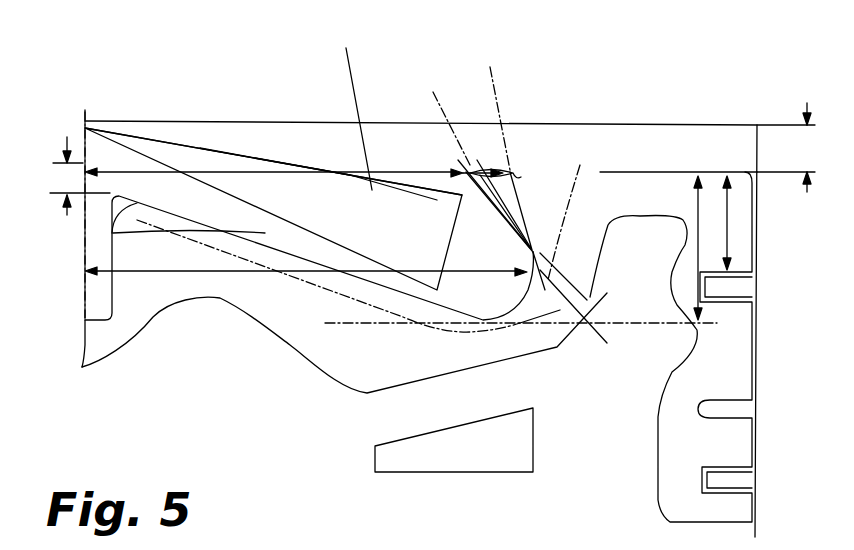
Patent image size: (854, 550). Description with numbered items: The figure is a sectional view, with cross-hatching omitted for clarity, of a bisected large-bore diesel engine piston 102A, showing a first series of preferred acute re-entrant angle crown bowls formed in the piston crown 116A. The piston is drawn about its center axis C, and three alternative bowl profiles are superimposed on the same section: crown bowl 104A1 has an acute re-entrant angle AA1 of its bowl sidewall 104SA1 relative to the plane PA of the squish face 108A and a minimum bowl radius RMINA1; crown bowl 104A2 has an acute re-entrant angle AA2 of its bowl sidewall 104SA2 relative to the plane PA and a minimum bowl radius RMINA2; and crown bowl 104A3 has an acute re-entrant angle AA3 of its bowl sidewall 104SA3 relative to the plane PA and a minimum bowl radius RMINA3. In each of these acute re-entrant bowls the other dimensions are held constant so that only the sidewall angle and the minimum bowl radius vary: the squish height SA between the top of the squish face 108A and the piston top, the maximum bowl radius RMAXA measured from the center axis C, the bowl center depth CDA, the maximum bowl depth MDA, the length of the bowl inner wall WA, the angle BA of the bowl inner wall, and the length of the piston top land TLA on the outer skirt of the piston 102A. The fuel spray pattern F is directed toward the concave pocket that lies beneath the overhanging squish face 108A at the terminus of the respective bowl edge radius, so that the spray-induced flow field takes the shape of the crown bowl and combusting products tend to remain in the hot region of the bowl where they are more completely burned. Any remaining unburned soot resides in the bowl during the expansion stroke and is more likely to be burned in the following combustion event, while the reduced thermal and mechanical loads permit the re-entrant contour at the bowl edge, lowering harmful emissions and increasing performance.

The crown bowl 104A1 is at (273, 152).
The crown bowl 104A2 is at (363, 197).
The crown bowl 104A3 is at (423, 192).
The fuel spray pattern F is at (354, 108).
The minimum bowl radius RMINA1 is at (187, 172).
The minimum bowl radius RMINA2 is at (473, 177).
The minimum bowl radius RMINA3 is at (428, 237).
The bowl sidewall 104SA3 is at (513, 170).
The squish face 108A is at (648, 170).
The piston crown 116A is at (713, 160).
The squish height SA is at (802, 147).
The bowl center depth CDA is at (57, 180).
The center axis C is at (85, 238).
The angle of the bowl inner wall BA is at (307, 281).
The length of the bowl inner wall WA is at (265, 233).
The bowl sidewall 104SA1 is at (462, 222).
The maximum bowl radius RMAXA is at (248, 270).
The bowl sidewall 104SA2 is at (335, 252).
The maximum bowl depth MDA is at (697, 203).
The acute re-entrant angle AA1 is at (583, 280).
The length of the piston top land TLA is at (733, 200).
The piston 102A is at (755, 250).
The plane of the squish face PA is at (337, 326).
The acute re-entrant angle AA3 is at (515, 188).
The acute re-entrant angle AA2 is at (558, 303).